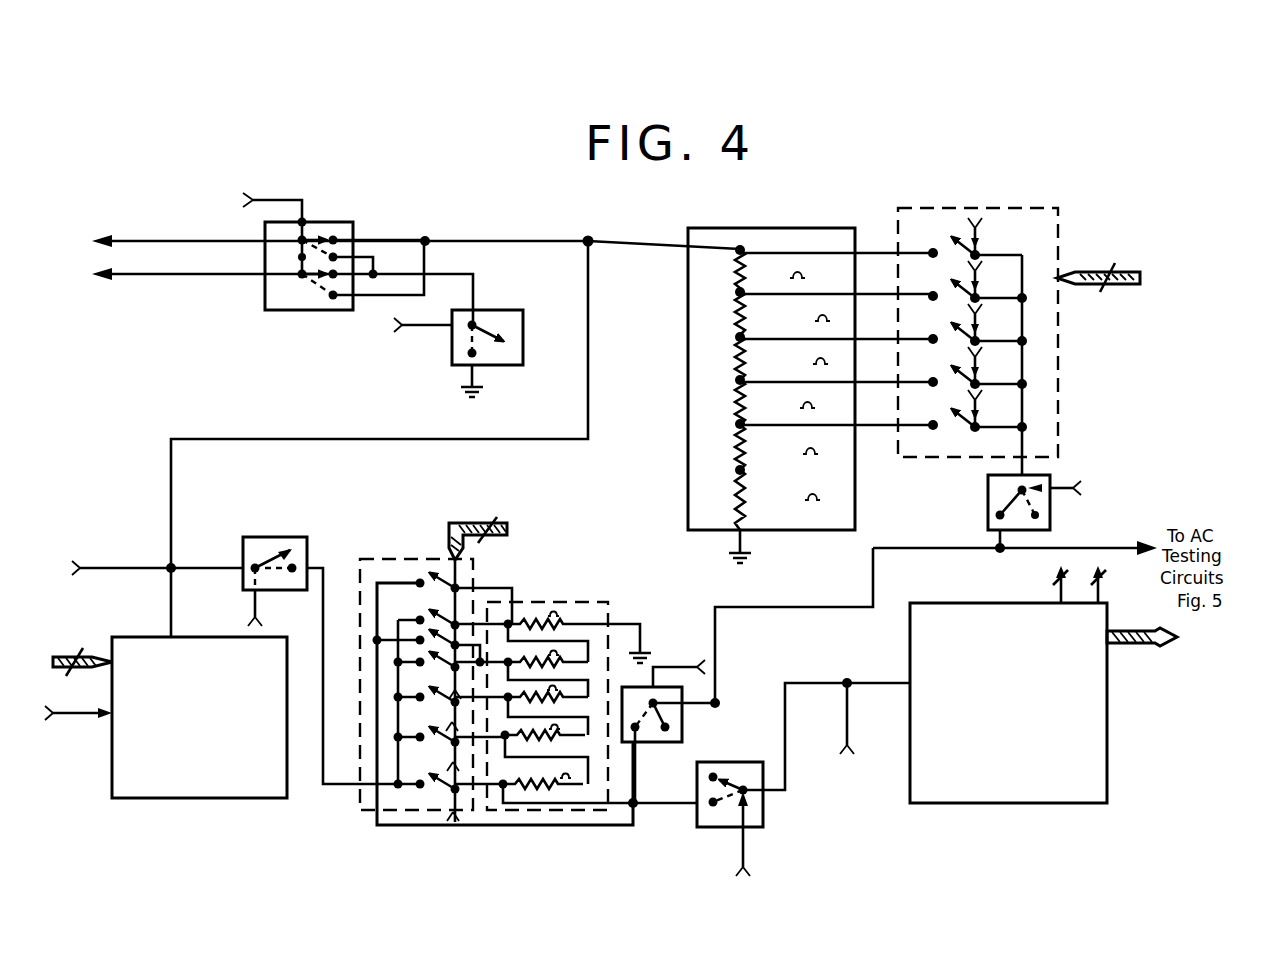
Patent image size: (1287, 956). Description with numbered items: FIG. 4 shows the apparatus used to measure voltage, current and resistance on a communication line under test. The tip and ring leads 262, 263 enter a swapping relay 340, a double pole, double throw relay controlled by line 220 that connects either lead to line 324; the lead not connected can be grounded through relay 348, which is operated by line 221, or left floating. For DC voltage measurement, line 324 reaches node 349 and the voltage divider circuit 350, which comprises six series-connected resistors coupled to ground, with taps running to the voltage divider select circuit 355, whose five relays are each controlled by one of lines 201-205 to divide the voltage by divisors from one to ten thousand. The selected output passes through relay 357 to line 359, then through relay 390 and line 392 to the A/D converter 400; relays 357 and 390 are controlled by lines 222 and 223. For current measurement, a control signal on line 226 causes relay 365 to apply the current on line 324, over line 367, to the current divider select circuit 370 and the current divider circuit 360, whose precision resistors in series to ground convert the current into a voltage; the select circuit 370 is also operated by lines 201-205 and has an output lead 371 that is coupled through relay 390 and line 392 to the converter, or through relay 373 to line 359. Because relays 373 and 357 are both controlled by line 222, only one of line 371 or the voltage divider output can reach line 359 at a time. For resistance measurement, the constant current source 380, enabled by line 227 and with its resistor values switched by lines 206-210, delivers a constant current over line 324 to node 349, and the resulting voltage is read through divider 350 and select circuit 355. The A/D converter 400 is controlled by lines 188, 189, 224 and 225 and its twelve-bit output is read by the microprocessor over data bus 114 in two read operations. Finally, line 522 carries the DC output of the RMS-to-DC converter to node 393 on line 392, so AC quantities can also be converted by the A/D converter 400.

The data bus 114 is at (1147, 647).
The line 188 is at (1105, 592).
The line 189 is at (1136, 619).
The lines 201-205 is at (1107, 293).
The lines 206-210 is at (67, 652).
The line 220 is at (292, 200).
The line 221 is at (413, 330).
The line 222 is at (1057, 492).
The line 223 is at (748, 847).
The line 224 is at (1052, 582).
The line 225 is at (1049, 597).
The line 226 is at (258, 604).
The line 227 is at (73, 716).
The lead 262 is at (141, 240).
The lead 263 is at (134, 274).
The line 324 is at (482, 240).
The swapping relay 340 is at (347, 223).
The relay 348 is at (520, 310).
The node 349 is at (588, 243).
The voltage divider circuit 350 is at (790, 228).
The voltage divider select circuit 355 is at (1000, 207).
The relay 357 is at (988, 495).
The line 359 is at (761, 607).
The current divider circuit 360 is at (567, 602).
The relay 365 is at (273, 537).
The line 367 is at (324, 580).
The current divider select circuit 370 is at (418, 558).
The output lead 371 is at (681, 801).
The relay 373 is at (640, 742).
The constant current source 380 is at (210, 637).
The relay 390 is at (752, 760).
The line 392 is at (803, 682).
The node 393 is at (849, 682).
The A/D converter 400 is at (941, 601).
The line 522 is at (848, 717).